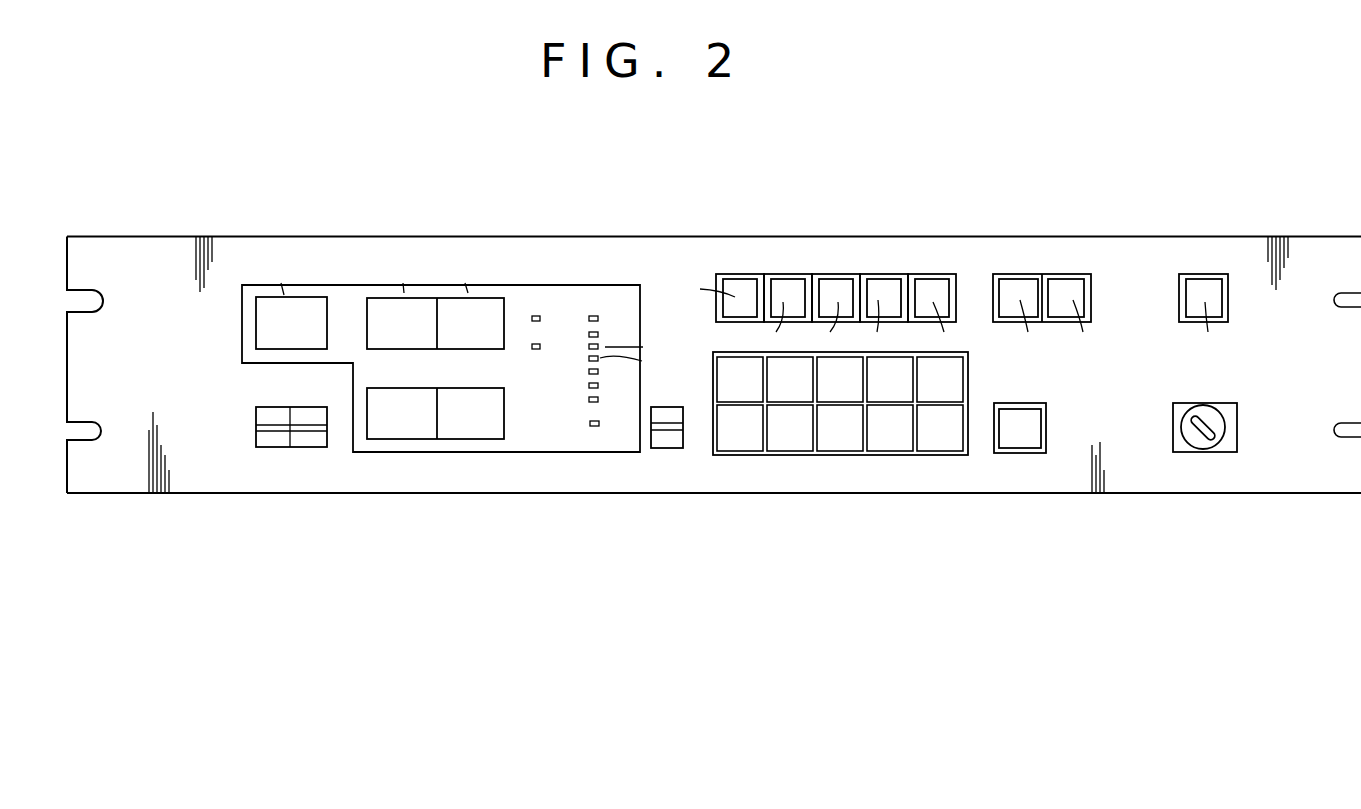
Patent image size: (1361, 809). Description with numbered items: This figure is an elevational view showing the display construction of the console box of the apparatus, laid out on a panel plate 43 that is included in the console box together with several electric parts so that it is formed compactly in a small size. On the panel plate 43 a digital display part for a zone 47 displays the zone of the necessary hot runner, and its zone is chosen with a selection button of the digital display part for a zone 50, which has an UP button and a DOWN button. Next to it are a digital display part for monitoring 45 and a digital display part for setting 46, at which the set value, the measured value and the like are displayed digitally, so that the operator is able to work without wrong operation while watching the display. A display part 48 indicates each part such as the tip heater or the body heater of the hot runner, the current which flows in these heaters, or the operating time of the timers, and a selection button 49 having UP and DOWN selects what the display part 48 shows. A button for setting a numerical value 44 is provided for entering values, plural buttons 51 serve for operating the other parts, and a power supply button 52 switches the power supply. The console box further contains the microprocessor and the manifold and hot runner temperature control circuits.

The panel plate 43 is at (668, 242).
The button for setting a numerical value 44 is at (890, 445).
The digital display part for monitoring 45 is at (417, 337).
The digital display part for setting 46 is at (473, 430).
The digital display part for a zone 47 is at (318, 308).
The display part 48 is at (643, 348).
The selection button of the display part 49 is at (672, 433).
The selection button of the digital display part for a zone 50 is at (318, 440).
The plural buttons for operating the other parts 51 is at (877, 283).
The power supply button 52 is at (1200, 276).